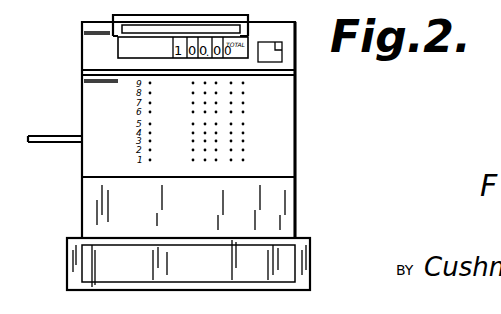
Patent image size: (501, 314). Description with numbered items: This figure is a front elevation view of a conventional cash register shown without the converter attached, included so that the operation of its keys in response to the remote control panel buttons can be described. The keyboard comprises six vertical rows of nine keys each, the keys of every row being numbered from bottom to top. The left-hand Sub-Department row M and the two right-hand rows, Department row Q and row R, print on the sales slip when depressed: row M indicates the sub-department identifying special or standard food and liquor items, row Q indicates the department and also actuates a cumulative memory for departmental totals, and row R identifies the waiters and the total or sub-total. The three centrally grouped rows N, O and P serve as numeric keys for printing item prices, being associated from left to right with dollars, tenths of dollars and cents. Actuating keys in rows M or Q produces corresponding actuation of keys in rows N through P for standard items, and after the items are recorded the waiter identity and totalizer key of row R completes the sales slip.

The sub-department row M is at (150, 129).
The dollars pricing row N is at (192, 129).
The tenths of dollars pricing row O is at (204, 129).
The cents pricing row P is at (216, 129).
The department row Q is at (230, 129).
The waiter and total row R is at (243, 129).